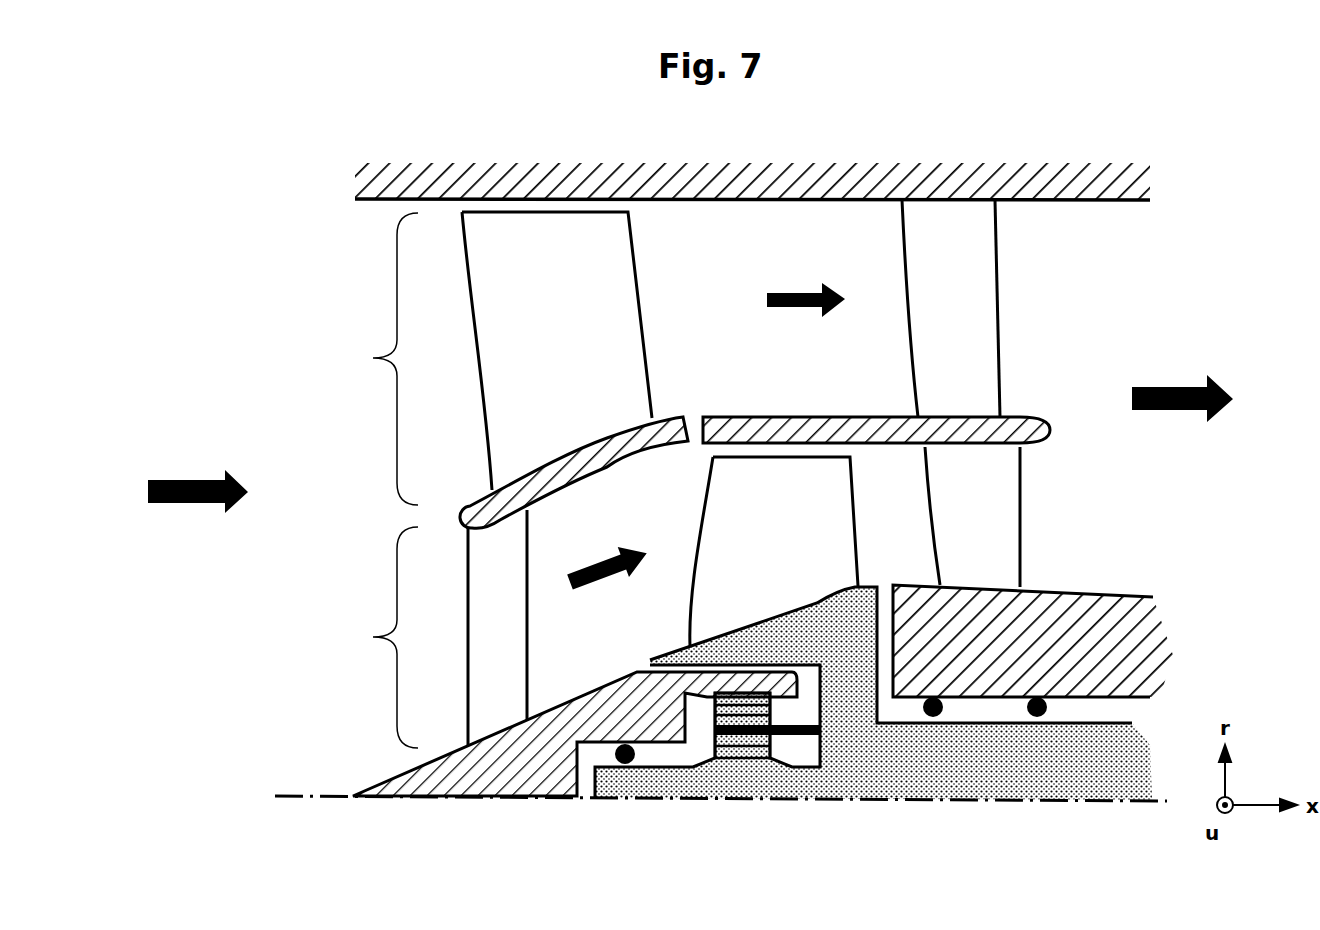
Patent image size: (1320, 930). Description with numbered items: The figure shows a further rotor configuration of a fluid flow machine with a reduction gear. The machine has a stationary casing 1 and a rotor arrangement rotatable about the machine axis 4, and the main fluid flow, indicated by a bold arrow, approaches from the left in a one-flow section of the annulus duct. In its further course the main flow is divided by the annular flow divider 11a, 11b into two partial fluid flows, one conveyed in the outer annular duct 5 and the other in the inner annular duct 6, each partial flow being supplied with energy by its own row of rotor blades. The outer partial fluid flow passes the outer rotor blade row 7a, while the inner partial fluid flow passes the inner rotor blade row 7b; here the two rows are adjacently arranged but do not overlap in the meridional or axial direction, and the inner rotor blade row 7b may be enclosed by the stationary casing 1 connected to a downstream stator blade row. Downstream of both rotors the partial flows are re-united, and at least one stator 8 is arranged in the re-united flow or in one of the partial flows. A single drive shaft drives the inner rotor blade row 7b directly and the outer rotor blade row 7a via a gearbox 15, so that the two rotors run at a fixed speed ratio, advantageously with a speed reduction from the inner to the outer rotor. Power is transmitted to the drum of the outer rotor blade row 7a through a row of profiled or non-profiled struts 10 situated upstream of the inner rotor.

The casing 1 is at (580, 173).
The machine axis 4 is at (423, 797).
The outer annular duct 5 is at (367, 359).
The inner annular duct 6 is at (372, 637).
The outer rotor blade row 7a is at (583, 258).
The inner rotor blade row 7b is at (817, 545).
The stator vane 8 is at (968, 297).
The struts 10 is at (502, 637).
The flow divider 11a is at (577, 473).
The flow divider 11b is at (762, 418).
The gearbox 15 is at (748, 738).